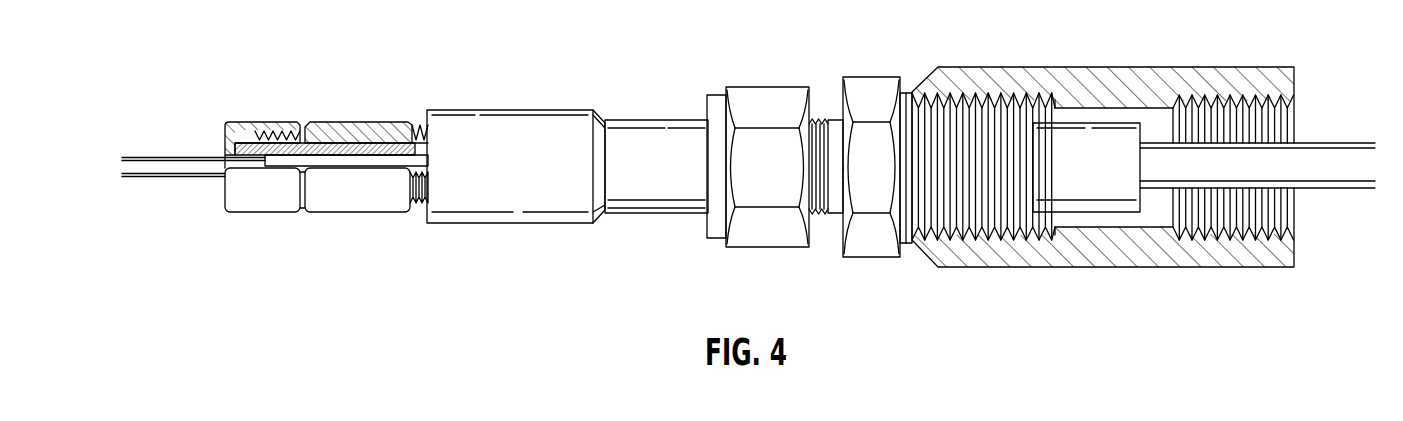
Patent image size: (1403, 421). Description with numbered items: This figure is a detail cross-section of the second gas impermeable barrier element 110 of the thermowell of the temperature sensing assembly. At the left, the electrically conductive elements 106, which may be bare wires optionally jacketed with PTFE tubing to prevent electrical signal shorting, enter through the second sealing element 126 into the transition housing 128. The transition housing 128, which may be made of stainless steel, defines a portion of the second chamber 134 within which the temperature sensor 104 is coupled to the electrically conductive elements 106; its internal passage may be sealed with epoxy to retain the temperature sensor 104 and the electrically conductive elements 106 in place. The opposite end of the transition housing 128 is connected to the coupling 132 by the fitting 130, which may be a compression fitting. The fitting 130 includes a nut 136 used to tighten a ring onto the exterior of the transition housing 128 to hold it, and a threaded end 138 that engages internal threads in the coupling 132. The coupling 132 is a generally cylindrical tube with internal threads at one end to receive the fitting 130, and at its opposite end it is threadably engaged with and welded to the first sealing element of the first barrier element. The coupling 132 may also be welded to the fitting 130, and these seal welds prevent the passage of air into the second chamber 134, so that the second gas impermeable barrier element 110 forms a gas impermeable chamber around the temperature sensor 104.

The temperature sensor 104 is at (1338, 143).
The electrically conductive element 106 is at (177, 158).
The second gas impermeable barrier element 110 is at (376, 71).
The second sealing element 126 is at (359, 213).
The transition housing 128 is at (513, 110).
The fitting 130 is at (870, 77).
The coupling 132 is at (1063, 67).
The second chamber 134 is at (1153, 123).
The nut 136 is at (767, 87).
The threaded end 138 is at (980, 208).